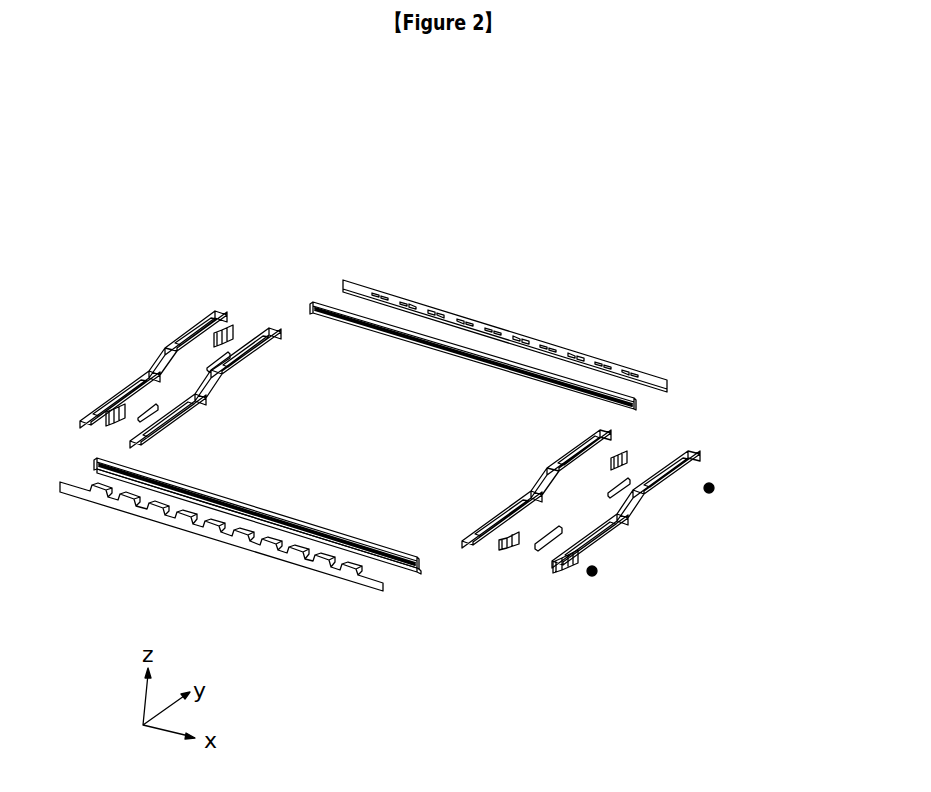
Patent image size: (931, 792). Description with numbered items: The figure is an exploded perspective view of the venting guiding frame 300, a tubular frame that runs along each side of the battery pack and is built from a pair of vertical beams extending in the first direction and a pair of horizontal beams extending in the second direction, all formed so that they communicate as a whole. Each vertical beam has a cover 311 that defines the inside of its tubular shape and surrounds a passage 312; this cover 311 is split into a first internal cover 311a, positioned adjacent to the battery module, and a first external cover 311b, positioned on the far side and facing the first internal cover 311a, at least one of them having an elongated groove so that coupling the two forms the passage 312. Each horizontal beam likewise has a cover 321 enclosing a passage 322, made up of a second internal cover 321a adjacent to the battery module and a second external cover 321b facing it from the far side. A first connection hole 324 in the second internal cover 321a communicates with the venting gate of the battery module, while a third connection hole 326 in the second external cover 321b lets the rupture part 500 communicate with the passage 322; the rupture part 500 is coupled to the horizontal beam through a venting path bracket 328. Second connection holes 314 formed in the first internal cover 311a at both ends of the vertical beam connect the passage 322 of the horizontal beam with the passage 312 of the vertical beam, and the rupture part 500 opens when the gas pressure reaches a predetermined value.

The venting guiding frame 300 is at (299, 120).
The cover 311 is at (246, 577).
The first internal cover 311a is at (407, 571).
The first external cover 311b is at (221, 571).
The passage 312 is at (360, 553).
The second connection hole 314 is at (313, 306).
The cover 321 is at (638, 471).
The second internal cover 321a is at (608, 436).
The second external cover 321b is at (687, 460).
The passage 322 is at (80, 422).
The first connection hole 324 is at (180, 418).
The third connection hole 326 is at (563, 566).
The venting path bracket 328 is at (538, 548).
The rupture part 500 is at (592, 578).